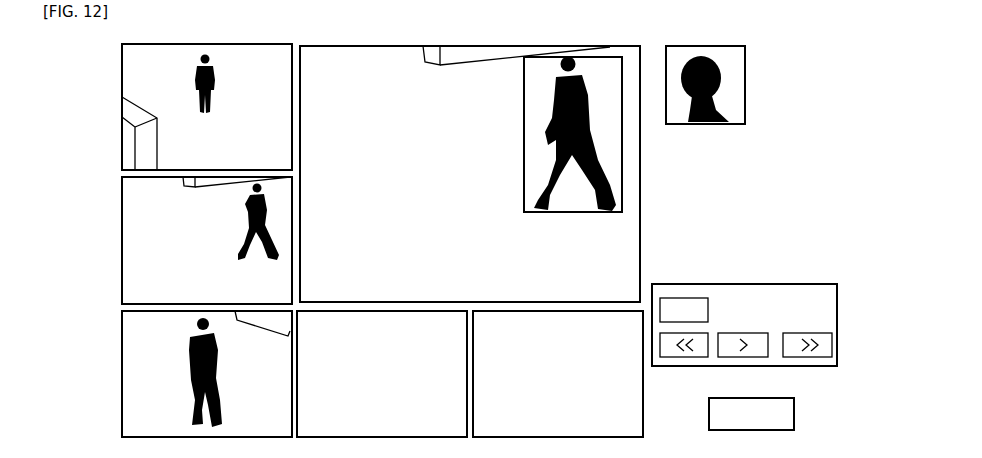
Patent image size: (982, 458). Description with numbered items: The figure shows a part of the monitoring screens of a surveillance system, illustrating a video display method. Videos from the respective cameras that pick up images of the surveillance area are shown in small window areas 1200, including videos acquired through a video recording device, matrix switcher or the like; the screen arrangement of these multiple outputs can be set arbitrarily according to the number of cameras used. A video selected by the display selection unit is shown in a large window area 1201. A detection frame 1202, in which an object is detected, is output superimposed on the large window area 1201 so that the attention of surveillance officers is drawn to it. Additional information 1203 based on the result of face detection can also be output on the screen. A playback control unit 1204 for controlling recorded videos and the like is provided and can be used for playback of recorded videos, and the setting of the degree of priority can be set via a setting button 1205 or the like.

The small window areas 1200 is at (133, 57).
The large window area 1201 is at (641, 213).
The detection frame 1202 is at (523, 108).
The additional information 1203 is at (747, 80).
The playback control unit 1204 is at (790, 284).
The setting button 1205 is at (750, 398).